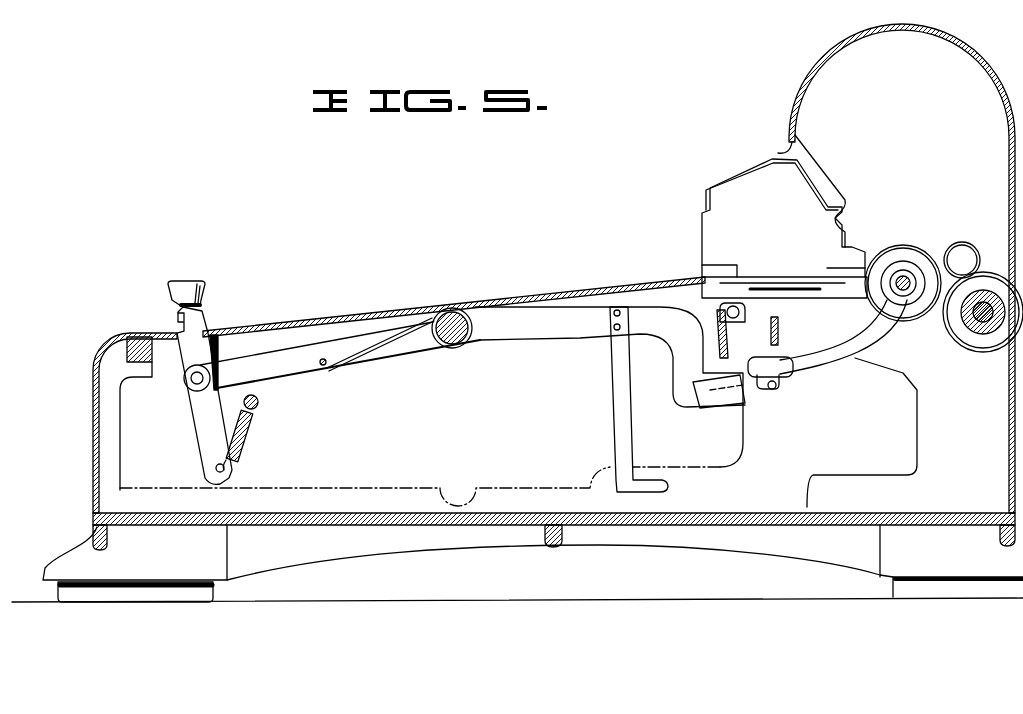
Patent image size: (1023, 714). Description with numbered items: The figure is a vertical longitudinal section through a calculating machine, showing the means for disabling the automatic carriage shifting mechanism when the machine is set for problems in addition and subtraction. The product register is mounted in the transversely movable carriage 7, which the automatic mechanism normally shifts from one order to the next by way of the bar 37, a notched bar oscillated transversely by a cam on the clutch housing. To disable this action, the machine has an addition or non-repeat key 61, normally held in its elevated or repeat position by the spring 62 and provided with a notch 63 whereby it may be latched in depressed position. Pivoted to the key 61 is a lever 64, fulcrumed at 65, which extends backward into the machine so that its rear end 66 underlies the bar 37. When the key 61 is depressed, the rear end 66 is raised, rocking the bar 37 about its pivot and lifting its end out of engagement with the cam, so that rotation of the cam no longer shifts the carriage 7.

The carriage 7 is at (778, 224).
The bar 37 is at (780, 322).
The addition or non-repeat key 61 is at (201, 312).
The spring 62 is at (247, 435).
The notch 63 is at (177, 319).
The lever 64 is at (360, 334).
The fulcrum 65 is at (457, 322).
The rear end of lever 66 is at (783, 360).